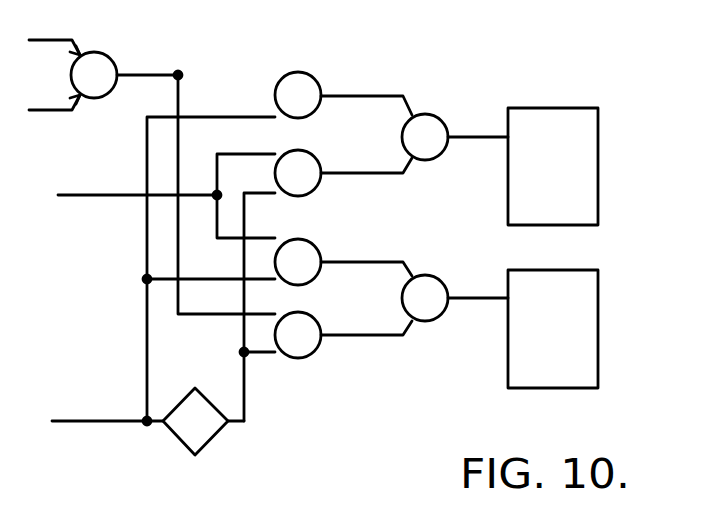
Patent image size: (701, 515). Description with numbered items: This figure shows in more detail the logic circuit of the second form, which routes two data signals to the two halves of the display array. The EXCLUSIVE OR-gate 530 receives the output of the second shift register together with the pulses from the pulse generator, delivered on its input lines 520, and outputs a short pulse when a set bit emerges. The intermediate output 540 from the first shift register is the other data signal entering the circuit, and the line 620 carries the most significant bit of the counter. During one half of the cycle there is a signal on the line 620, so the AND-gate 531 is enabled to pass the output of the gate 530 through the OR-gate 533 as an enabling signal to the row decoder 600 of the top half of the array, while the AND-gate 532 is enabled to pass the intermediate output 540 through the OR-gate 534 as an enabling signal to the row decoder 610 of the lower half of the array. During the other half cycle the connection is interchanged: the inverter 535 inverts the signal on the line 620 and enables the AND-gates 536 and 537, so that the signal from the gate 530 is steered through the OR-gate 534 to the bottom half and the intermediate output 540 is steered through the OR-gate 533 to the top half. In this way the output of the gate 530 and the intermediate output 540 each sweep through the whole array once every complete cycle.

The input signal lines 520 is at (43, 113).
The EXCLUSIVE OR-gate 530 is at (133, 48).
The AND-gate 531 is at (337, 64).
The AND-gate 532 is at (340, 238).
The OR-gate 533 is at (453, 92).
The OR-gate 534 is at (458, 263).
The inverter 535 is at (205, 437).
The AND-gate 536 is at (337, 318).
The AND-gate 537 is at (337, 148).
The intermediate output 540 is at (83, 194).
The row decoder 600 is at (593, 88).
The row decoder 610 is at (545, 280).
The output 620 is at (77, 415).